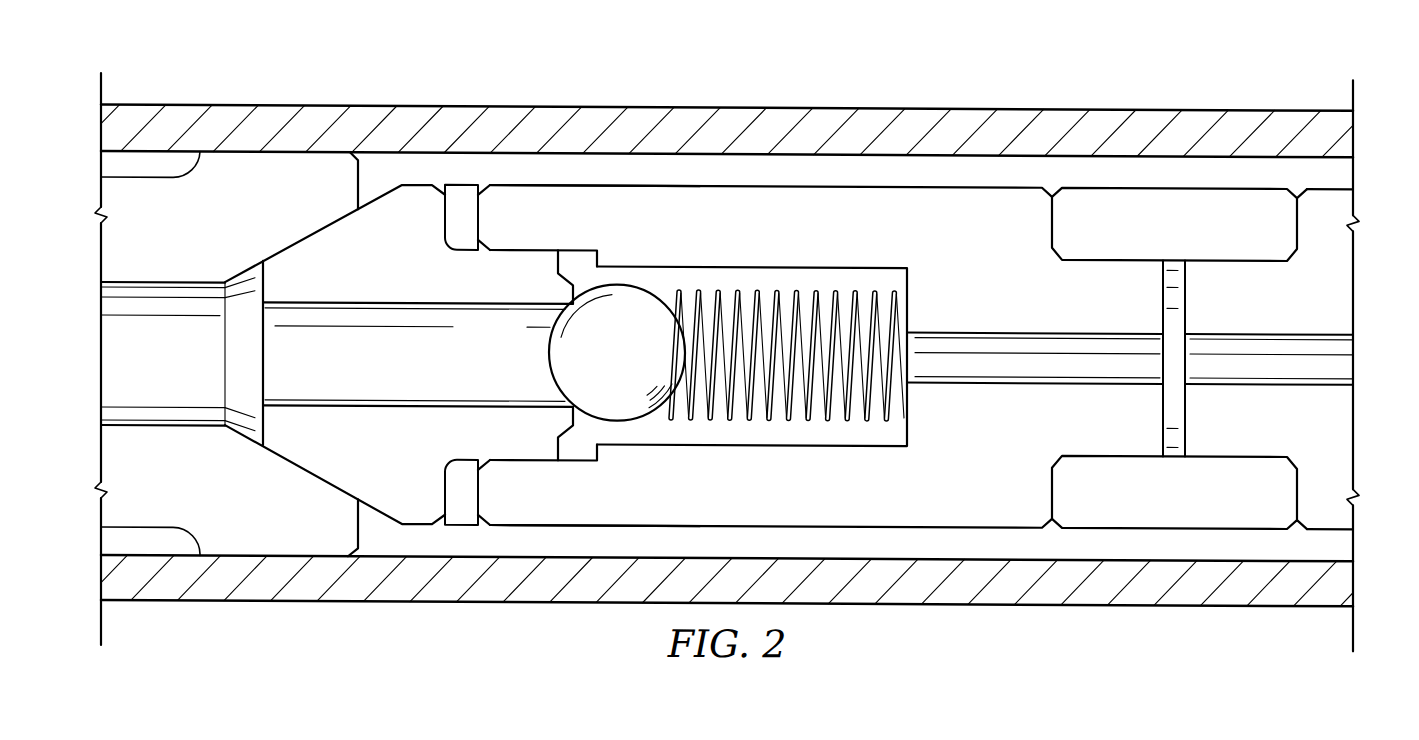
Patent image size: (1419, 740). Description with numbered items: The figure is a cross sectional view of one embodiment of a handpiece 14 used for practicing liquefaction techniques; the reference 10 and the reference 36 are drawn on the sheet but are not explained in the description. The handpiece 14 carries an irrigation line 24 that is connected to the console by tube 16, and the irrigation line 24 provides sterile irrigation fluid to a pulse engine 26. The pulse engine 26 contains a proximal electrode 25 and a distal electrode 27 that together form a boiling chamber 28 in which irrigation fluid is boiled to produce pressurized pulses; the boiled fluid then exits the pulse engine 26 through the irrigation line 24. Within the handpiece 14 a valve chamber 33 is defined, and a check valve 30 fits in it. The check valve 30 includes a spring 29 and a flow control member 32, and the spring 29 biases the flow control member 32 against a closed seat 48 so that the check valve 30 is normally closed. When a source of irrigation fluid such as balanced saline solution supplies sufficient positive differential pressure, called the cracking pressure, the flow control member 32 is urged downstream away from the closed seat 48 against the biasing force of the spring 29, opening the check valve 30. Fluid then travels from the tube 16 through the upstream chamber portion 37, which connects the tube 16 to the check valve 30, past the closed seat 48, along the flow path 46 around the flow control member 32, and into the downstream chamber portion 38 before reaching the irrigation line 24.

The connector assembly 10 is at (729, 228).
The handpiece 14 is at (1014, 65).
The tubing 16 is at (287, 556).
The irrigation line 24 is at (1295, 379).
The proximal electrode 25 is at (797, 182).
The pulse engine 26 is at (1203, 95).
The distal electrode 27 is at (1330, 182).
The boiling chamber 28 is at (1173, 236).
The spring 29 is at (783, 417).
The check valve 30 is at (633, 201).
The flow control member 32 is at (568, 361).
The valve chamber 33 is at (617, 245).
The conical section 36 is at (380, 523).
The upstream chamber portion 37 is at (528, 341).
The downstream chamber portion 38 is at (925, 353).
The flow path 46 is at (655, 266).
The closed seat 48 is at (582, 271).